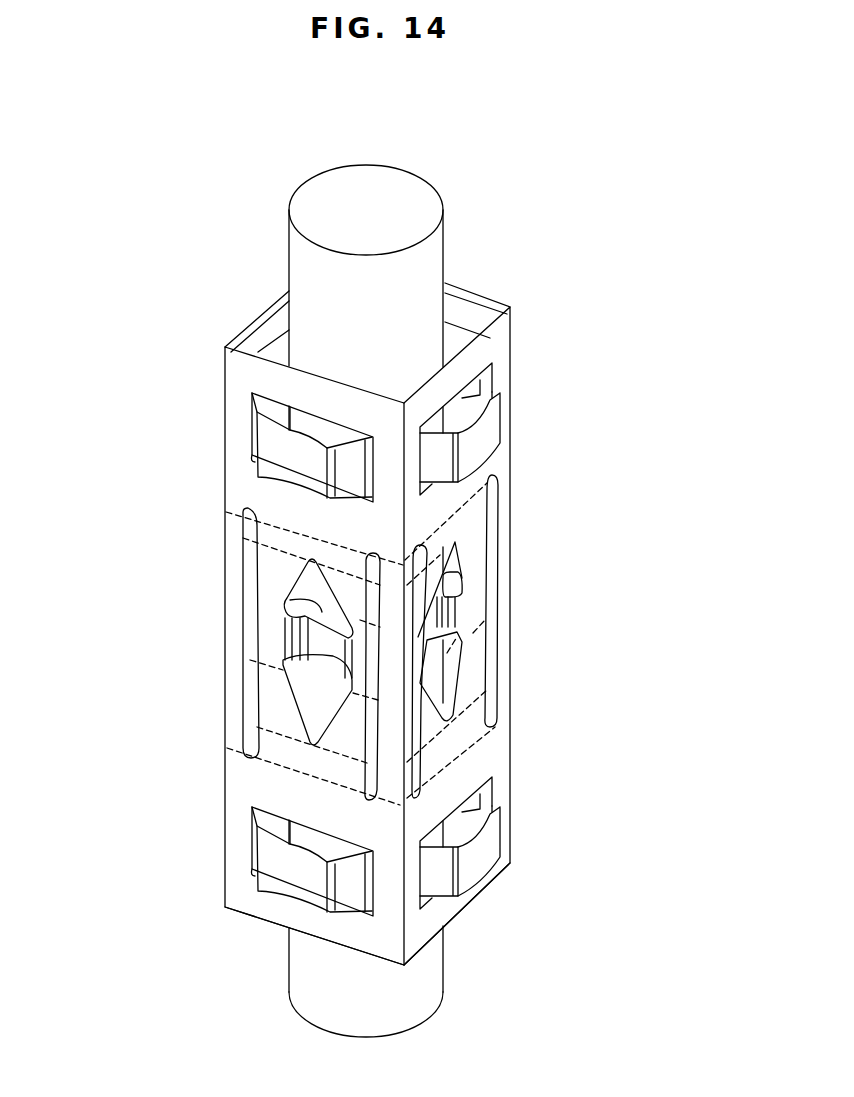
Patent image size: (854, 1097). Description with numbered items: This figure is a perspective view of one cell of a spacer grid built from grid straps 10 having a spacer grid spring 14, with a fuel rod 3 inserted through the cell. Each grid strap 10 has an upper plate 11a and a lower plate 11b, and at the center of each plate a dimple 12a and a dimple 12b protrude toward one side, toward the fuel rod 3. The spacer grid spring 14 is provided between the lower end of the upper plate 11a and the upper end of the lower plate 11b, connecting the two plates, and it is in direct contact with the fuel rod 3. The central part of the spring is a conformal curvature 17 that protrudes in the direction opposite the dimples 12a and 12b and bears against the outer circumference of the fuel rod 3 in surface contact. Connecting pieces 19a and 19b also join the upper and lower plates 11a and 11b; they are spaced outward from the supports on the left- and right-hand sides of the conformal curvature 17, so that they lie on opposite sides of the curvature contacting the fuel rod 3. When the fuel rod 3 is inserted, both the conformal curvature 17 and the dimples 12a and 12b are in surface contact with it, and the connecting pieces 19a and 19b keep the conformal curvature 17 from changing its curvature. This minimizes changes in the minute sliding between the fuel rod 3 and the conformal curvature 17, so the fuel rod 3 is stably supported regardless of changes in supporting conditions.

The fuel rod 3 is at (356, 190).
The grid strap 10 is at (545, 767).
The upper plate 11a is at (498, 347).
The lower plate 11b is at (238, 858).
The dimple 12a is at (475, 435).
The dimple 12b is at (420, 895).
The spacer grid spring 14 is at (243, 643).
The conformal curvature 17 is at (285, 602).
The connecting piece 19a is at (243, 550).
The connecting piece 19b is at (502, 605).